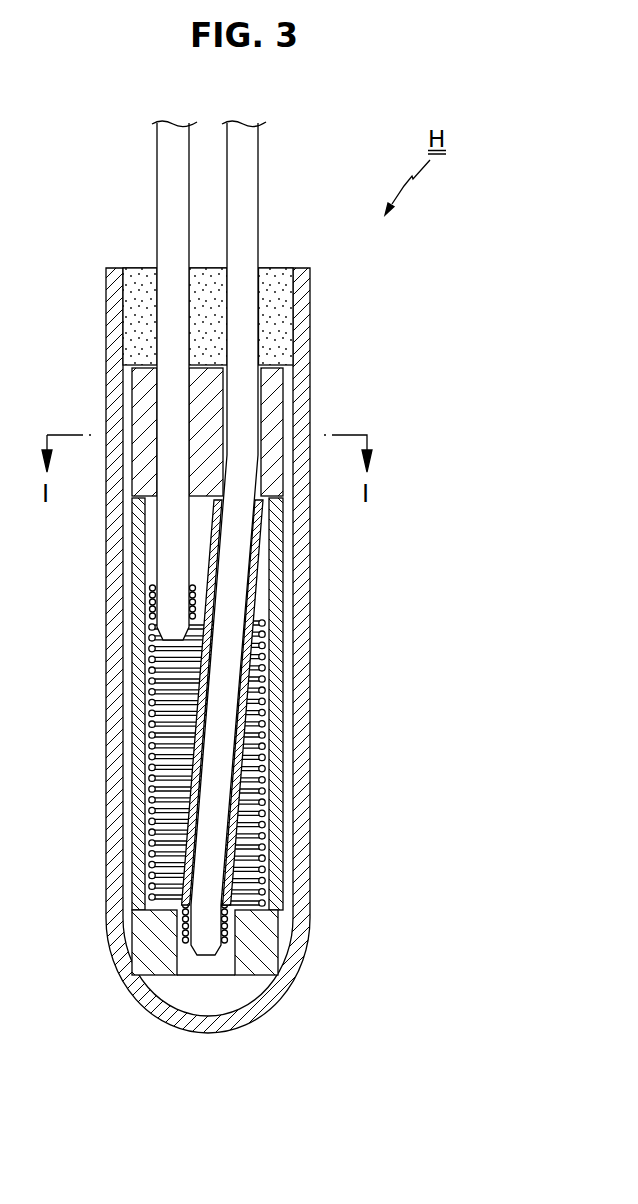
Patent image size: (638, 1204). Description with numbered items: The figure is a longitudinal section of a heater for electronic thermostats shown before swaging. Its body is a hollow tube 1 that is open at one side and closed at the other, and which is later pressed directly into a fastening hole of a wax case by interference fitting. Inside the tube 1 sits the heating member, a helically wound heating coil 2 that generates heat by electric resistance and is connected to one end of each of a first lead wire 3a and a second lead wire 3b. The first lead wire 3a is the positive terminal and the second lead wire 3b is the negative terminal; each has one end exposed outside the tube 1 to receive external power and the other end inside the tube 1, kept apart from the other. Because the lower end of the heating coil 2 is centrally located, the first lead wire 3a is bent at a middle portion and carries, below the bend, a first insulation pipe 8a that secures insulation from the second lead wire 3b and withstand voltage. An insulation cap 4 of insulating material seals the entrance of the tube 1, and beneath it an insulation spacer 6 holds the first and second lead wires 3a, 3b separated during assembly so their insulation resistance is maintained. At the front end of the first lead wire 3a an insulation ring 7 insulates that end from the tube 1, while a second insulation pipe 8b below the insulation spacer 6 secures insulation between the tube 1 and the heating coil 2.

The tube 1 is at (308, 677).
The heating coil 2 is at (157, 702).
The first lead wire 3a is at (259, 192).
The second lead wire 3b is at (162, 191).
The insulation cap 4 is at (137, 304).
The insulation spacer 6 is at (137, 394).
The insulation ring 7 is at (262, 943).
The first insulation pipe 8a is at (248, 572).
The second insulation pipe 8b is at (275, 635).